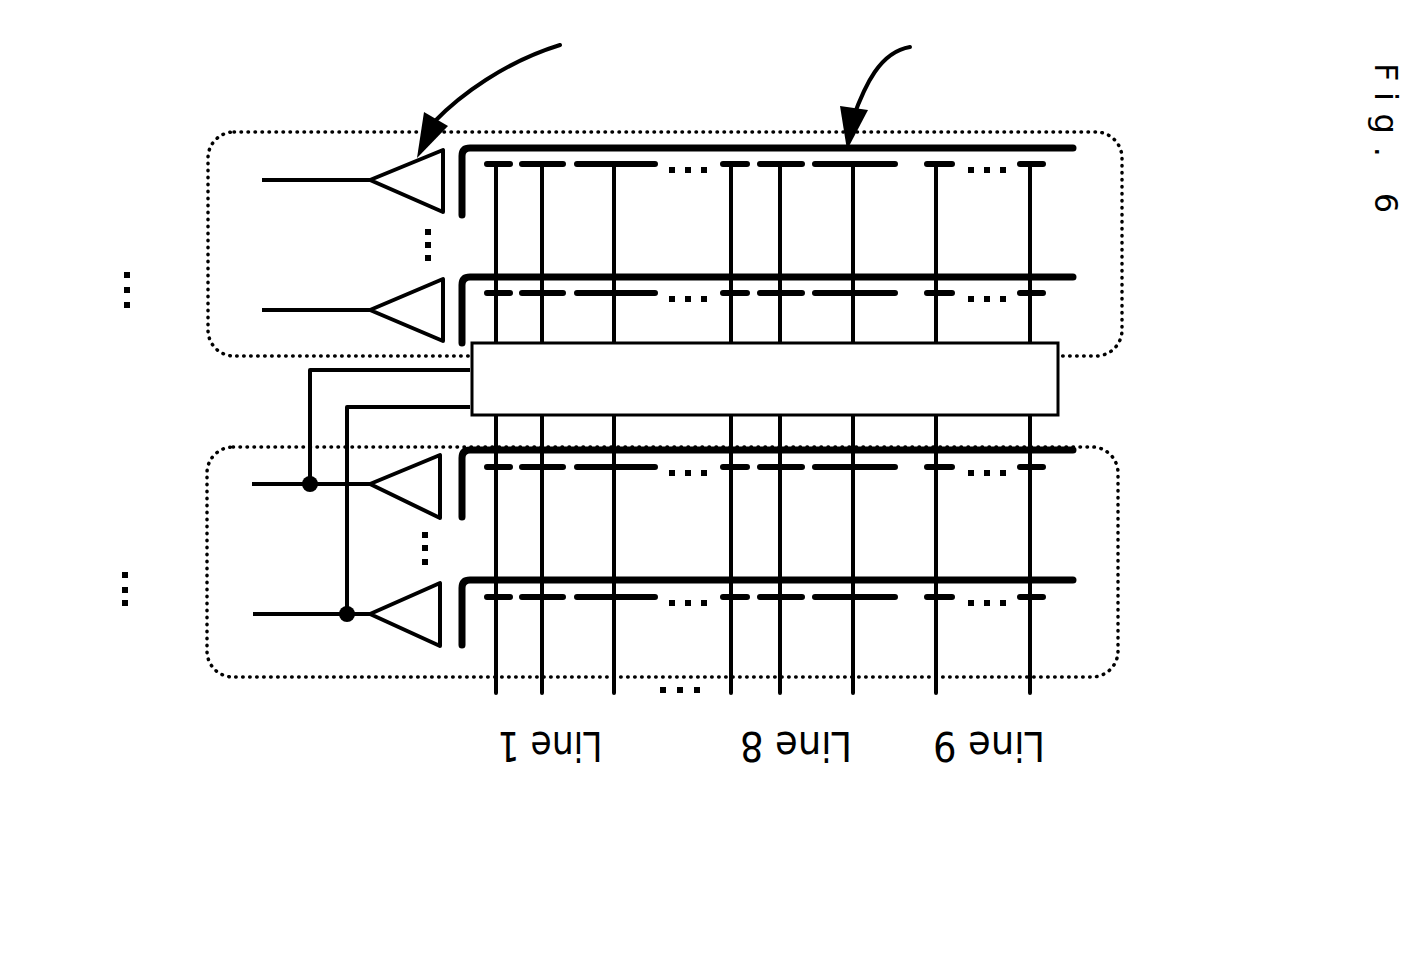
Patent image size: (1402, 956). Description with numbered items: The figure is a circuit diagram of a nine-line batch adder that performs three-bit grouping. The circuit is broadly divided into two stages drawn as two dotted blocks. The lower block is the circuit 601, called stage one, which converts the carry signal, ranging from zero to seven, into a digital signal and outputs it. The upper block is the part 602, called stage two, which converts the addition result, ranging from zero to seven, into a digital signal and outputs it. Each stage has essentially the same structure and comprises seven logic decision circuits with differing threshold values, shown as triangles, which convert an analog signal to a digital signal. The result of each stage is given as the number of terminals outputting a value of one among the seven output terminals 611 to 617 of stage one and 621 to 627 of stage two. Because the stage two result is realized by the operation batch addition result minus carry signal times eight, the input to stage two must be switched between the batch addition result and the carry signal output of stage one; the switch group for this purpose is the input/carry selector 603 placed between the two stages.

The circuit converting carry signal to digital signal (stage 1) 601 is at (1118, 642).
The part converting addition result to digital signal (stage 2) 602 is at (1122, 303).
The input/carry selector 603 is at (1058, 412).
The output terminal 611 is at (247, 613).
The output terminal 617 is at (247, 495).
The output terminal 621 is at (248, 315).
The output terminal 627 is at (250, 197).